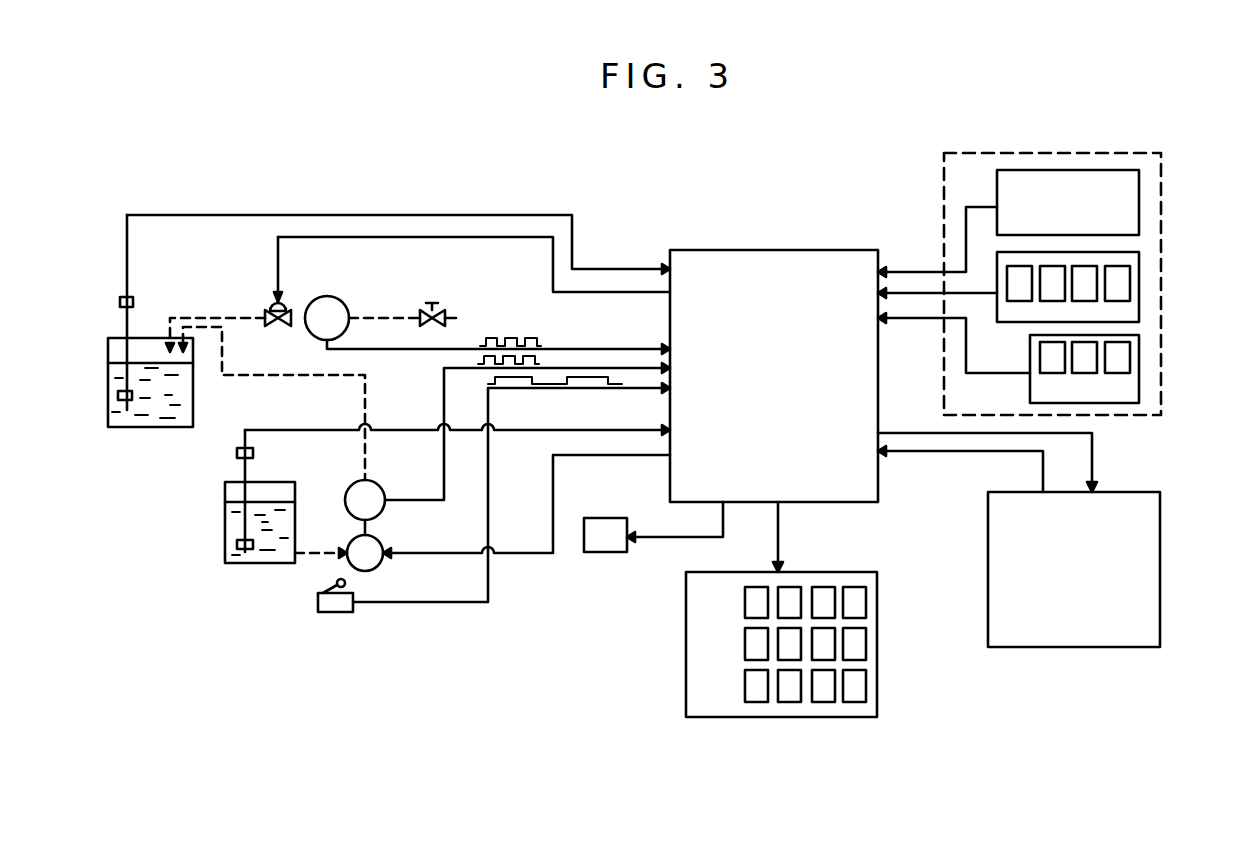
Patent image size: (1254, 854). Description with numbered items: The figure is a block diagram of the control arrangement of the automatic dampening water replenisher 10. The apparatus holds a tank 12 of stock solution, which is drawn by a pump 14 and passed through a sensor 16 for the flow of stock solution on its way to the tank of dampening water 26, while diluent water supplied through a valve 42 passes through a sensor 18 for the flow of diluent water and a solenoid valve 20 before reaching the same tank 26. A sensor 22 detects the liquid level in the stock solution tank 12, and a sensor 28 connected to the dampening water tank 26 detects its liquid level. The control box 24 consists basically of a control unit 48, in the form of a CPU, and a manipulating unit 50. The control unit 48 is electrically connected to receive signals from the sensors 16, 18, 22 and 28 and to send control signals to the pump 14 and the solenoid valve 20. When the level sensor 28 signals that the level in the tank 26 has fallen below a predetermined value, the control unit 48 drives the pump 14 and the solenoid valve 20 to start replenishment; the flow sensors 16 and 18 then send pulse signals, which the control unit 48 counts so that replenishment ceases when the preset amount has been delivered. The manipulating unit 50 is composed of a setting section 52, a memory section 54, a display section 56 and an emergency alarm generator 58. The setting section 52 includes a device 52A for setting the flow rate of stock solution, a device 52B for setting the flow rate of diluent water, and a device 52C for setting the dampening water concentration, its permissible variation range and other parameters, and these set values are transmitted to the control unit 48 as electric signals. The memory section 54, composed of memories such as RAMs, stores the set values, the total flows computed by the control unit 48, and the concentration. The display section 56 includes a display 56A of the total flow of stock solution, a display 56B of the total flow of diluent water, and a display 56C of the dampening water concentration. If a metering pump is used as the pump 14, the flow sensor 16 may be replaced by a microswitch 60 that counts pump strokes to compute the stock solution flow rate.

The automatic dampening water replenisher 10 is at (648, 212).
The tank of stock solution 12 is at (248, 563).
The pump for stock solution 14 is at (382, 566).
The sensor for the flow of stock solution 16 is at (380, 484).
The sensor for the flow of diluent water 18 is at (345, 304).
The solenoid valve 20 is at (281, 327).
The sensor for detecting the liquid level in the tank 22 is at (237, 453).
The control box 24 is at (876, 193).
The tank of dampening water 26 is at (143, 428).
The sensor for detecting liquid level 28 is at (135, 297).
The valve 42 is at (440, 312).
The control unit 48 is at (790, 250).
The manipulating unit 50 is at (1095, 675).
The setting section 52 is at (1163, 270).
The device for setting the flow rate of stock solution 52A is at (1139, 385).
The device for setting the flow rate of diluent water 52B is at (1139, 310).
The device for setting the concentration of dampening water 52C is at (1139, 205).
The memory section 54 is at (1160, 572).
The display section 56 is at (766, 609).
The display of the total flow of stock solution 56A is at (686, 607).
The display of the total flow of diluent water 56B is at (686, 650).
The display of the concentration of dampening water 56C is at (686, 693).
The emergency alarm generator 58 is at (603, 518).
The microswitch 60 is at (336, 612).